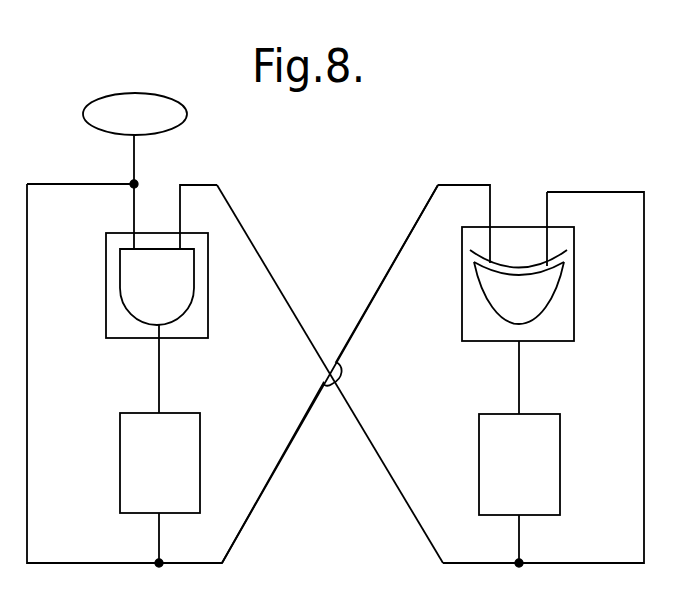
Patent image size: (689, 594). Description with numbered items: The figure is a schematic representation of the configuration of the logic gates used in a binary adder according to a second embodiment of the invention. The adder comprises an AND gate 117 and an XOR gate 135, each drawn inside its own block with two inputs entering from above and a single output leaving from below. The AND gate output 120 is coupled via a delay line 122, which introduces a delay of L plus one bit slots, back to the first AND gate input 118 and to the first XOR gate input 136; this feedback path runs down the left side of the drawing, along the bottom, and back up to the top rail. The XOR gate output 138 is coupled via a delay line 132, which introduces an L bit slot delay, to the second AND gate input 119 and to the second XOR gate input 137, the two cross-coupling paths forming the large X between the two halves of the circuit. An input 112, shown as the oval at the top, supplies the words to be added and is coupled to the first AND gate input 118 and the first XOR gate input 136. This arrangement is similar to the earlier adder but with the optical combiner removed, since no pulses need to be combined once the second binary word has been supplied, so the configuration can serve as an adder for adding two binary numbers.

The input 112 is at (155, 134).
The first AND gate input 118 is at (134, 233).
The second AND gate input 119 is at (204, 216).
The AND gate 117 is at (208, 280).
The AND gate output 120 is at (160, 340).
The delay line 122 is at (200, 450).
The first XOR gate input 136 is at (490, 227).
The second XOR gate input 137 is at (547, 227).
The XOR gate 135 is at (574, 276).
The XOR gate output 138 is at (520, 345).
The delay line 132 is at (560, 458).